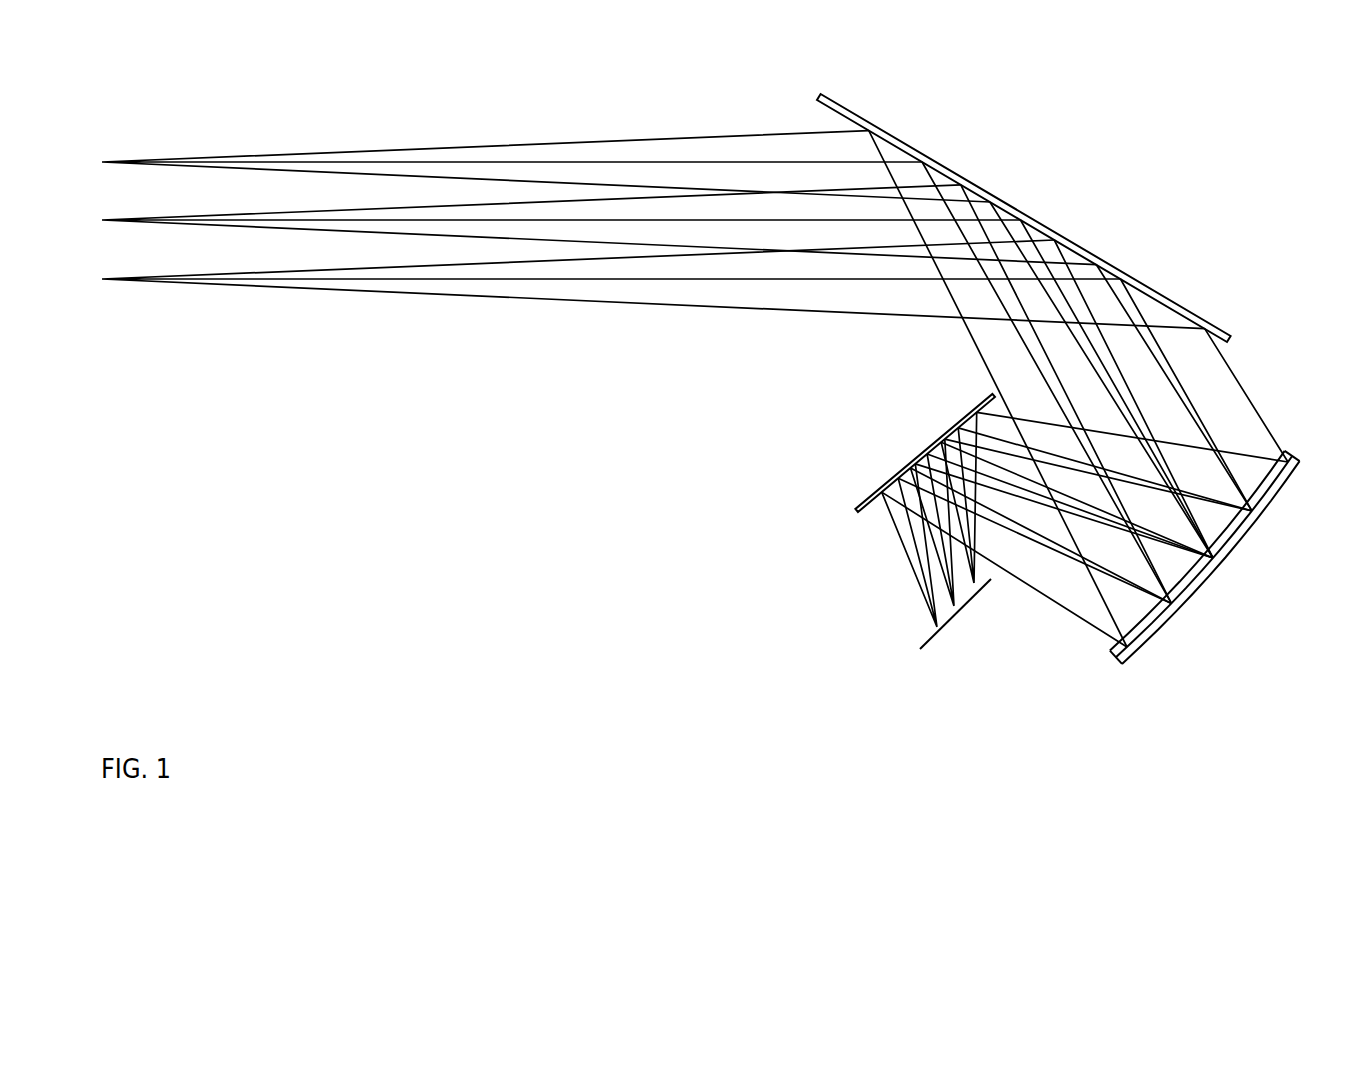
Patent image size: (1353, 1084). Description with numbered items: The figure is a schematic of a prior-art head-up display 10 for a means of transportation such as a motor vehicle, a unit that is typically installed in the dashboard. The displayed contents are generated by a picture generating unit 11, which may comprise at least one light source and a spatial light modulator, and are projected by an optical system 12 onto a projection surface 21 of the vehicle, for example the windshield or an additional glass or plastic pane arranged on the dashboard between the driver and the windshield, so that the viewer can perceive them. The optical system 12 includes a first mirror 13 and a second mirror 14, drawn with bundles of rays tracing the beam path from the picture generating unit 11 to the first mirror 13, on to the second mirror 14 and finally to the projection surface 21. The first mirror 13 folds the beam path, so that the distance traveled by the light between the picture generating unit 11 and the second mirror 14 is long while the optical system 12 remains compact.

The head-up display 10 is at (646, 449).
The picture generating unit 11 is at (928, 638).
The optical system 12 is at (1023, 646).
The first mirror 13 is at (866, 503).
The second mirror 14 is at (1213, 582).
The projection surface 21 is at (1032, 217).